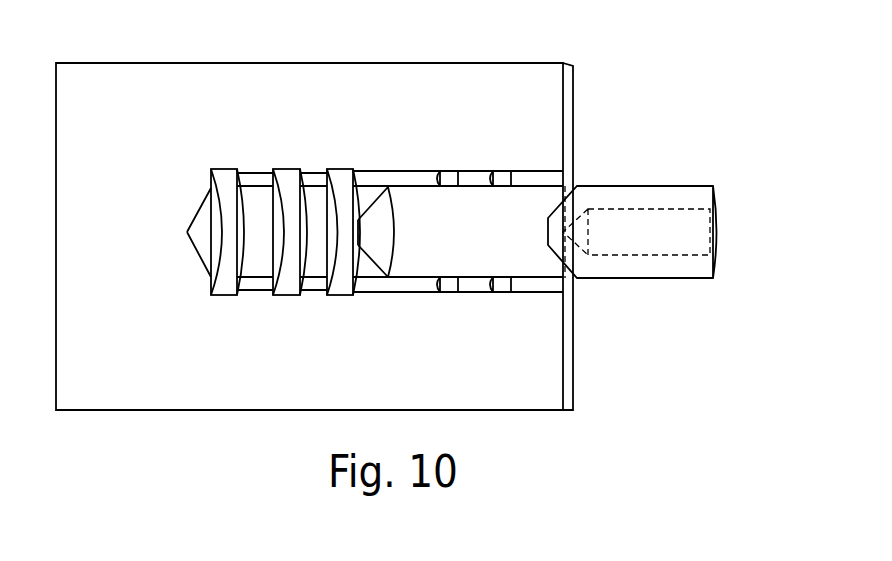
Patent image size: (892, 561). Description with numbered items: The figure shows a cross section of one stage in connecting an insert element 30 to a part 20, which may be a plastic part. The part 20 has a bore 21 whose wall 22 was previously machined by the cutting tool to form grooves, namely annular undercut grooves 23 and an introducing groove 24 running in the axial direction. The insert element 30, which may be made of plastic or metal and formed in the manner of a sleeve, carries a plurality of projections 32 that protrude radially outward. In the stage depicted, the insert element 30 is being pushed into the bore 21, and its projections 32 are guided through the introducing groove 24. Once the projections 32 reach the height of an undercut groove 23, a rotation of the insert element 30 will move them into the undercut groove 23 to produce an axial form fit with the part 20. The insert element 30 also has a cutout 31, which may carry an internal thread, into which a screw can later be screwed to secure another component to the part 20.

The part 20 is at (178, 158).
The bore 21 is at (340, 182).
The wall 22 is at (258, 205).
The undercut groove 23 is at (222, 250).
The introducing groove 24 is at (412, 174).
The insert element 30 is at (610, 186).
The cutout 31 is at (663, 210).
The projections 32 is at (450, 167).